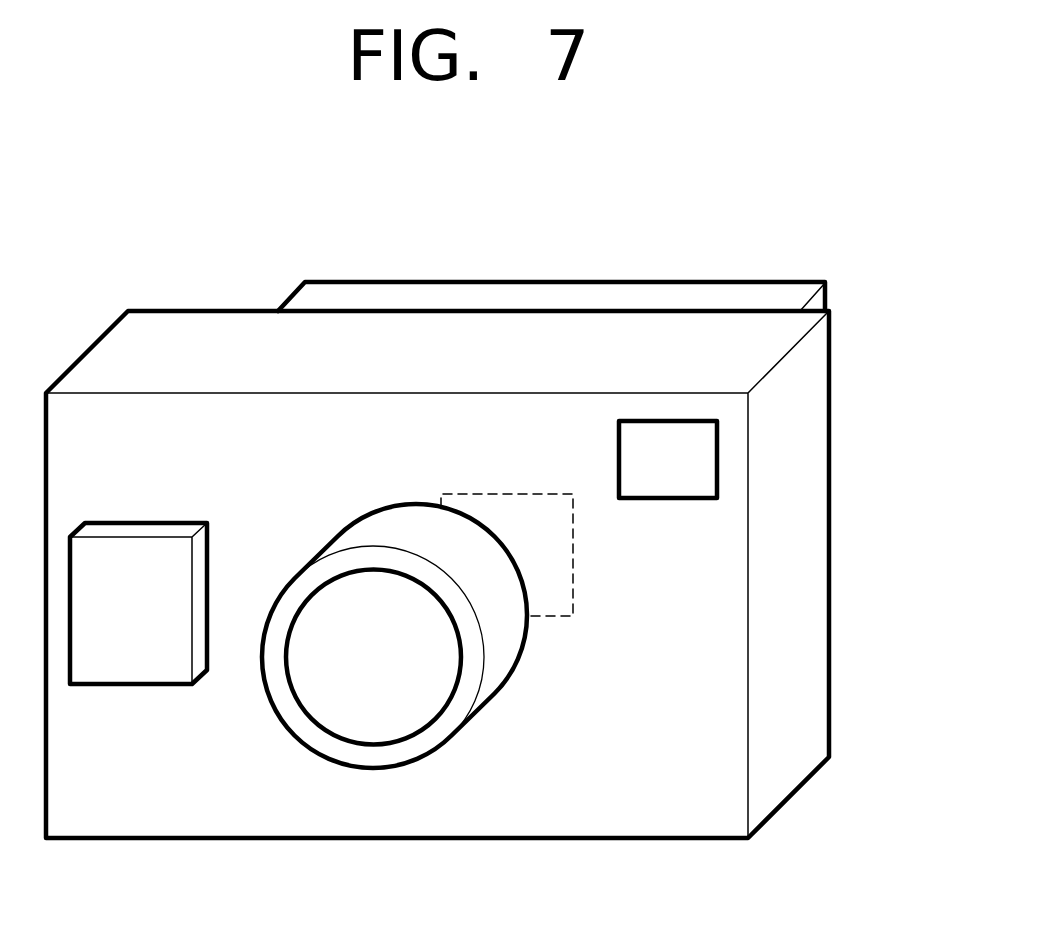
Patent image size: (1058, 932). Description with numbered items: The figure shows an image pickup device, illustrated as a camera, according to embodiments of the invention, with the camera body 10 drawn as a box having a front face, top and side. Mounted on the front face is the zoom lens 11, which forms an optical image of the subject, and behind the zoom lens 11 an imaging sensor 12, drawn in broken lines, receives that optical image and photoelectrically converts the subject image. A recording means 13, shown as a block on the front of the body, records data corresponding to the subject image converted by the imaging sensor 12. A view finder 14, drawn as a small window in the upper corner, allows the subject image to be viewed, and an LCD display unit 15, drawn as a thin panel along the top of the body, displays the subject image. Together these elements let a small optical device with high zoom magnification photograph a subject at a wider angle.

The camera body 10 is at (679, 810).
The zoom lens 11 is at (373, 727).
The imaging sensor 12 is at (555, 610).
The recording means 13 is at (145, 673).
The view finder 14 is at (710, 462).
The LCD display unit 15 is at (645, 290).